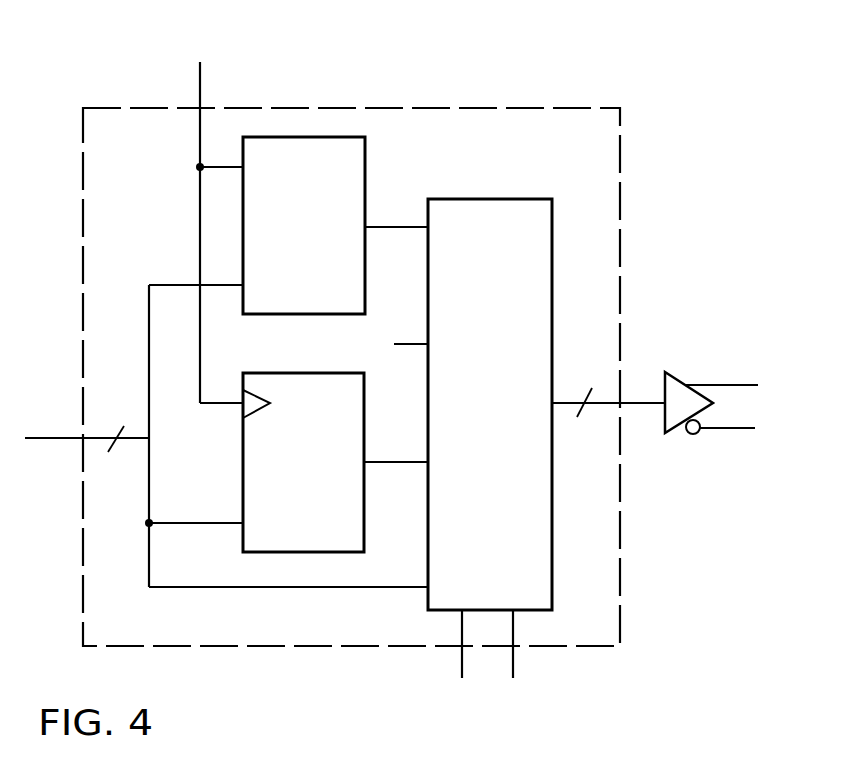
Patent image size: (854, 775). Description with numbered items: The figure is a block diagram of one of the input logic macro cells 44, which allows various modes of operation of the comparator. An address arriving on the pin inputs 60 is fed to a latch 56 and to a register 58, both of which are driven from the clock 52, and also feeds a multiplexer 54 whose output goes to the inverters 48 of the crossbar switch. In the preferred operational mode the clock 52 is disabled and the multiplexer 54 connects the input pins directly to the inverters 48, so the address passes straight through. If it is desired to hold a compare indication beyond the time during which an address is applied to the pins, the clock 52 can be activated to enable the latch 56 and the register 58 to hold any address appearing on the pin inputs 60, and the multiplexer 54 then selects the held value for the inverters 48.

The input logic macro cell 44 is at (660, 220).
The inverter 48 is at (675, 393).
The clock 52 is at (200, 96).
The multiplexer 54 is at (528, 265).
The latch 56 is at (343, 188).
The register 58 is at (297, 533).
The pin inputs 60 is at (98, 438).